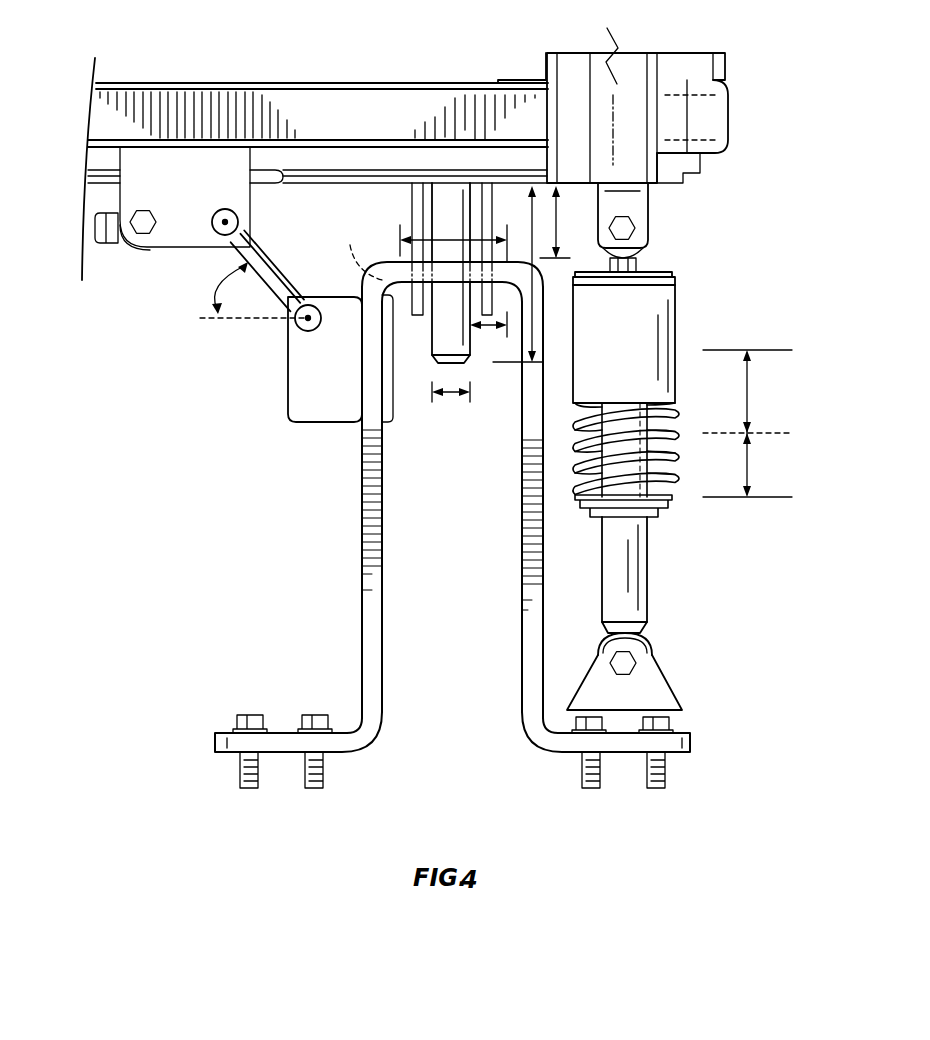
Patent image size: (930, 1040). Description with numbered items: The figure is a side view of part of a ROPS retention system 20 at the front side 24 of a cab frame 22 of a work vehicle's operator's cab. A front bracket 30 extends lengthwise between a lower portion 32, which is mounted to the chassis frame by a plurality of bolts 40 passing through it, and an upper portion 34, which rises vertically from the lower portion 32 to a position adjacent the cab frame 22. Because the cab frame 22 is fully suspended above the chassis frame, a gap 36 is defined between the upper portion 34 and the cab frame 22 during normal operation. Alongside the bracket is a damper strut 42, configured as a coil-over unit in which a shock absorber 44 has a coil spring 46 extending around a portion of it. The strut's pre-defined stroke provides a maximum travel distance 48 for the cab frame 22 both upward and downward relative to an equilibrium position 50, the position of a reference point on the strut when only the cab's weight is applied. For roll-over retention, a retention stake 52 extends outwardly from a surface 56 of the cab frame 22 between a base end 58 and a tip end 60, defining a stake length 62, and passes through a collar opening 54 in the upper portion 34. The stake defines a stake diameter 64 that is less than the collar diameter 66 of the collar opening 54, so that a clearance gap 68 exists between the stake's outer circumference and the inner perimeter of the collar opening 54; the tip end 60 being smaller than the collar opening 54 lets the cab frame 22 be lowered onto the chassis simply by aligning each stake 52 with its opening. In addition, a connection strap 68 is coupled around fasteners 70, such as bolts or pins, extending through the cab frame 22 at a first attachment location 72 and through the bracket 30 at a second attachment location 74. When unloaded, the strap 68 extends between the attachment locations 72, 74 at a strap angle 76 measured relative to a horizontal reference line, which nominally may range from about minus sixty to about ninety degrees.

The ROPS retention system 20 is at (116, 502).
The cab frame 22 is at (437, 78).
The front side 24 is at (722, 68).
The front bracket 30 is at (357, 590).
The lower portion 32 is at (213, 742).
The upper portion 34 is at (372, 289).
The gap 36 is at (556, 242).
The bolts 40 is at (304, 781).
The damper strut 42 is at (655, 549).
The shock absorber 44 is at (663, 320).
The coil spring 46 is at (600, 487).
The maximum travel distance 48 is at (743, 405).
The equilibrium position 50 is at (765, 435).
The retention stake 52 is at (427, 348).
The collar opening 54 is at (360, 248).
The surface 56 is at (337, 193).
The base end 58 is at (440, 197).
The tip end 60 is at (457, 350).
The stake length 62 is at (540, 318).
The stake diameter 64 is at (453, 395).
The collar diameter 66 is at (457, 237).
The connection strap 68 is at (268, 254).
The fasteners 70 is at (222, 226).
The first attachment location 72 is at (236, 218).
The second attachment location 74 is at (306, 322).
The strap angle 76 is at (211, 290).